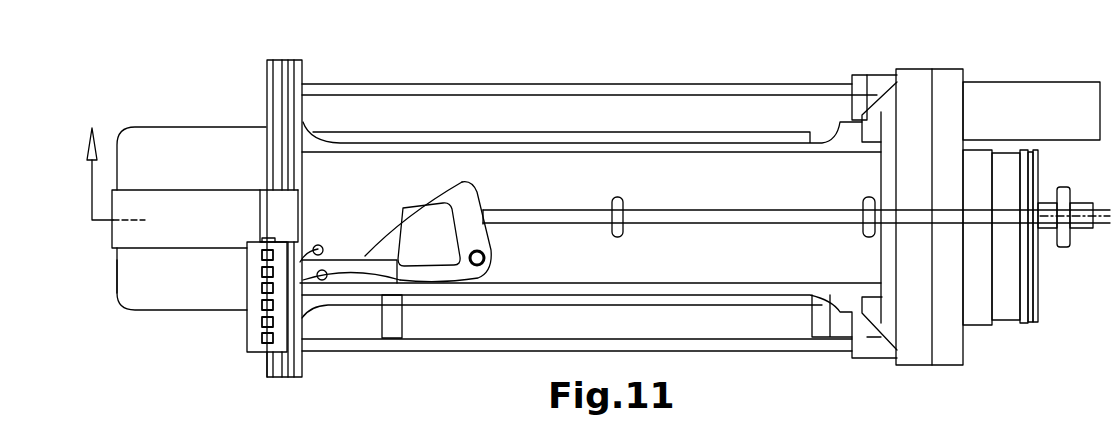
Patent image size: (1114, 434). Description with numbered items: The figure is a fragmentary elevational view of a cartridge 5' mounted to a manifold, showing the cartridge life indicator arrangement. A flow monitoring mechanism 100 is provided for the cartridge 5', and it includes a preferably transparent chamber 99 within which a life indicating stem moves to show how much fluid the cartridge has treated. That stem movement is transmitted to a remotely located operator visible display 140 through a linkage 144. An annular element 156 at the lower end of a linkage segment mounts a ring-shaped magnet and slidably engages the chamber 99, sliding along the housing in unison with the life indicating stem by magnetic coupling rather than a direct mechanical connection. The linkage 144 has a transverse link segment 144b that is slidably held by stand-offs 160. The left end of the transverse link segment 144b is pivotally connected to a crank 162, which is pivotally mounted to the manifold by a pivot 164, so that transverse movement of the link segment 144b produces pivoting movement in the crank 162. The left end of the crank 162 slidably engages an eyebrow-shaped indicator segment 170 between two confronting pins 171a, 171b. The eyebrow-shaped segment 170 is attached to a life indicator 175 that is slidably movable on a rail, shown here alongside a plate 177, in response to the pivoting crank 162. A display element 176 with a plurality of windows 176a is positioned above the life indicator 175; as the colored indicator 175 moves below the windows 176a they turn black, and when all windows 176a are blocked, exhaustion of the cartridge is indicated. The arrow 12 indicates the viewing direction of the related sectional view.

The mounting plate 177 is at (267, 82).
The life indicator 175 is at (275, 210).
The view direction arrow 12 is at (98, 163).
The display element 176 is at (240, 270).
The windows 176a is at (262, 334).
The operator visible display 140 is at (236, 355).
The cartridge 5' is at (153, 322).
The eyebrow-shaped indicator segment 170 is at (372, 240).
The confronting pin 171a is at (320, 245).
The confronting pin 171b is at (325, 280).
The crank 162 is at (458, 205).
The pivot 164 is at (488, 258).
The linkage 144 is at (727, 193).
The transverse link segment 144b is at (674, 222).
The stand-offs 160 is at (620, 205).
The flow monitoring mechanism 100 is at (1012, 348).
The annular element 156 is at (1064, 246).
The chamber 99 is at (1085, 204).